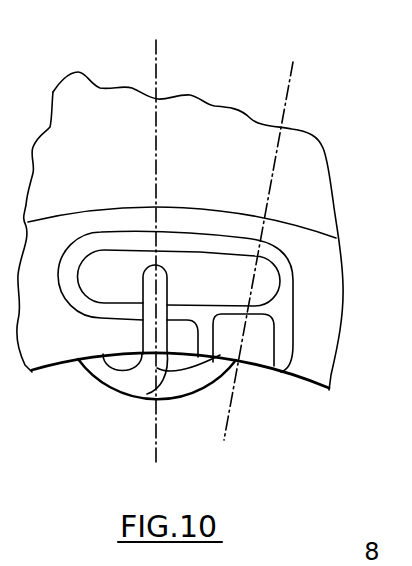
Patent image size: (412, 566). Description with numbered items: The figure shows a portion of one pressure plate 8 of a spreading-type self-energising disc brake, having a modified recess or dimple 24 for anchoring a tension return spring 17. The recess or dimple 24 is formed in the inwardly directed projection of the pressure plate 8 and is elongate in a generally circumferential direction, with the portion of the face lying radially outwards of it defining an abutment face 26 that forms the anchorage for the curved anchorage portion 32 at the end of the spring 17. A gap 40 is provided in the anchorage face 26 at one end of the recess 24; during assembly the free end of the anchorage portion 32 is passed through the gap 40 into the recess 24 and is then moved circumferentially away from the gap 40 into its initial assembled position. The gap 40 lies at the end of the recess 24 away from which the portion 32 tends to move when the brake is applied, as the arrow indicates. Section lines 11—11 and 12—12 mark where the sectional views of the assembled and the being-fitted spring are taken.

The pressure plate 8 is at (98, 108).
The recess or dimple 24 is at (203, 268).
The anchorage portion 32 is at (160, 290).
The abutment face 26 is at (107, 312).
The gap 40 is at (257, 343).
The tension return spring 17 is at (142, 412).
The line 11— 11 is at (187, 45).
The line 12— 12 is at (322, 73).